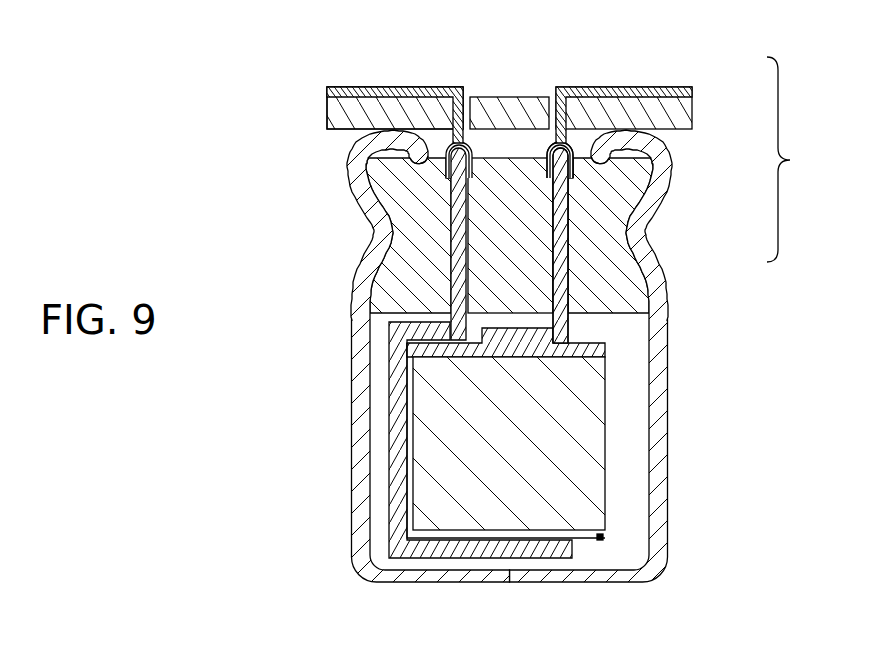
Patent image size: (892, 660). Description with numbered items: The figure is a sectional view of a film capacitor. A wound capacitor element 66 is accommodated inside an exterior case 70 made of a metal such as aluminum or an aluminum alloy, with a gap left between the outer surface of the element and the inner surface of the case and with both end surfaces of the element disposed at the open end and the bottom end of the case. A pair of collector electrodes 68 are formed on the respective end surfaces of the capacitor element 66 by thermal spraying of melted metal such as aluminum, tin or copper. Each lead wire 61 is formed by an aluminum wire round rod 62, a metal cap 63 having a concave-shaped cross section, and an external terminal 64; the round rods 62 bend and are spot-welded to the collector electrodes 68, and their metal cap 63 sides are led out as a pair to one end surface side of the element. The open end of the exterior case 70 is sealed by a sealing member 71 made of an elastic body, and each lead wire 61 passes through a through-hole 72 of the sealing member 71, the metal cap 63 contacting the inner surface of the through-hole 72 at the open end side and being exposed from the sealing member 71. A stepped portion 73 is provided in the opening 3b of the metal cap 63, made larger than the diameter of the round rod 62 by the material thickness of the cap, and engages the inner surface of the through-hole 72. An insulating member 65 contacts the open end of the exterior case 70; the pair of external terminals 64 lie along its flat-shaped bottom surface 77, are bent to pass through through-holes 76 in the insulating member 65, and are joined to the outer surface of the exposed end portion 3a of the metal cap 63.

The lead wire 61 is at (548, 319).
The aluminum wire round rod 62 is at (570, 217).
The metal cap 63 is at (593, 160).
The external terminal 64 is at (371, 90).
The insulating member 65 is at (338, 110).
The capacitor element 66 is at (598, 430).
The collector electrode 68 is at (605, 352).
The exterior case 70 is at (350, 403).
The sealing member 71 is at (400, 283).
The through-hole 72 is at (455, 232).
The stepped portion 73 is at (447, 178).
The through-hole 76 is at (471, 101).
The bottom surface 77 is at (423, 90).
The exposed end portion 3a is at (574, 153).
The opening 3b is at (572, 177).